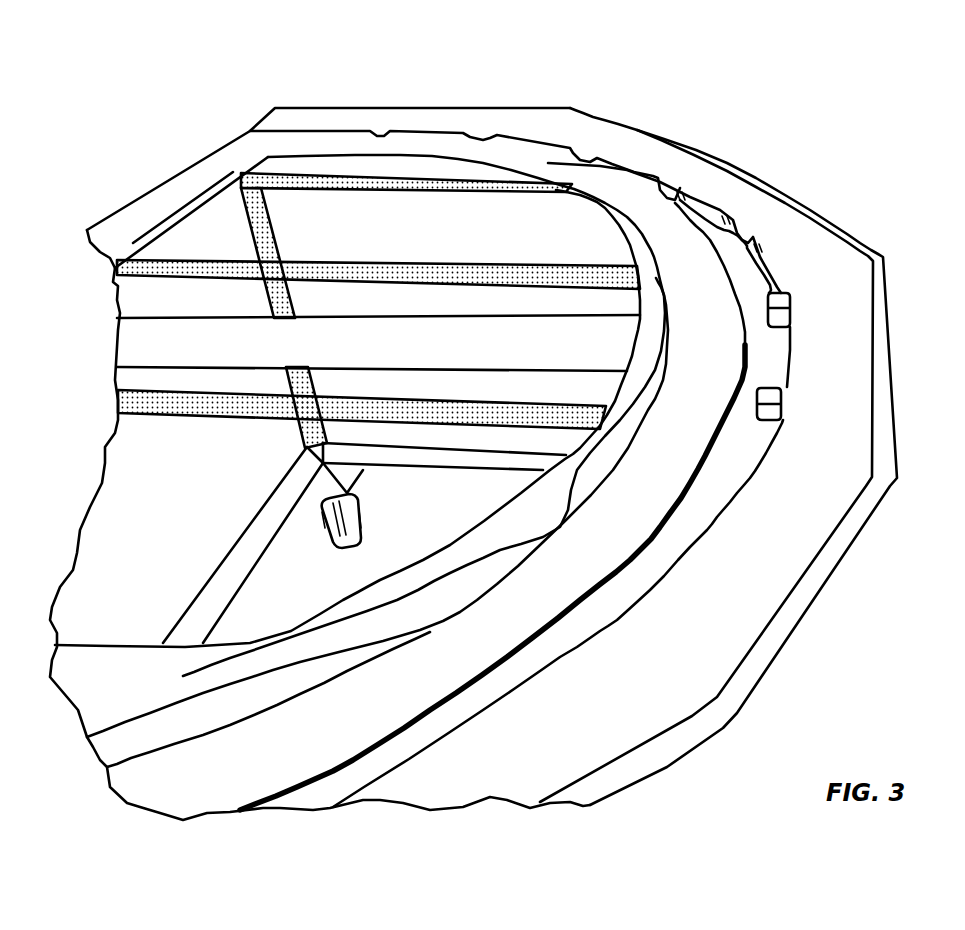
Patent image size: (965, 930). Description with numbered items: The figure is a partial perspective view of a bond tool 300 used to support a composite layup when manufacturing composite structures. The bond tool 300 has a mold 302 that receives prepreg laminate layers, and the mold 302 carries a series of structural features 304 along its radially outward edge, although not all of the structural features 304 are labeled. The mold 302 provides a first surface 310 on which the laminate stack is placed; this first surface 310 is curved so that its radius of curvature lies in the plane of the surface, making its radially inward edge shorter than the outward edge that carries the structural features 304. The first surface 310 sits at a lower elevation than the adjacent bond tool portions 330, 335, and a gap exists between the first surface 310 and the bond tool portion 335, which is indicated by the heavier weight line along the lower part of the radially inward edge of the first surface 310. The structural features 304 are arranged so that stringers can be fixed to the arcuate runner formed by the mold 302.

The bond tool 300 is at (127, 151).
The mold 302 is at (774, 468).
The structural features 304 is at (800, 301).
The first surface 310 is at (700, 531).
The bond tool portion 330 is at (718, 456).
The bond tool portion 335 is at (378, 408).